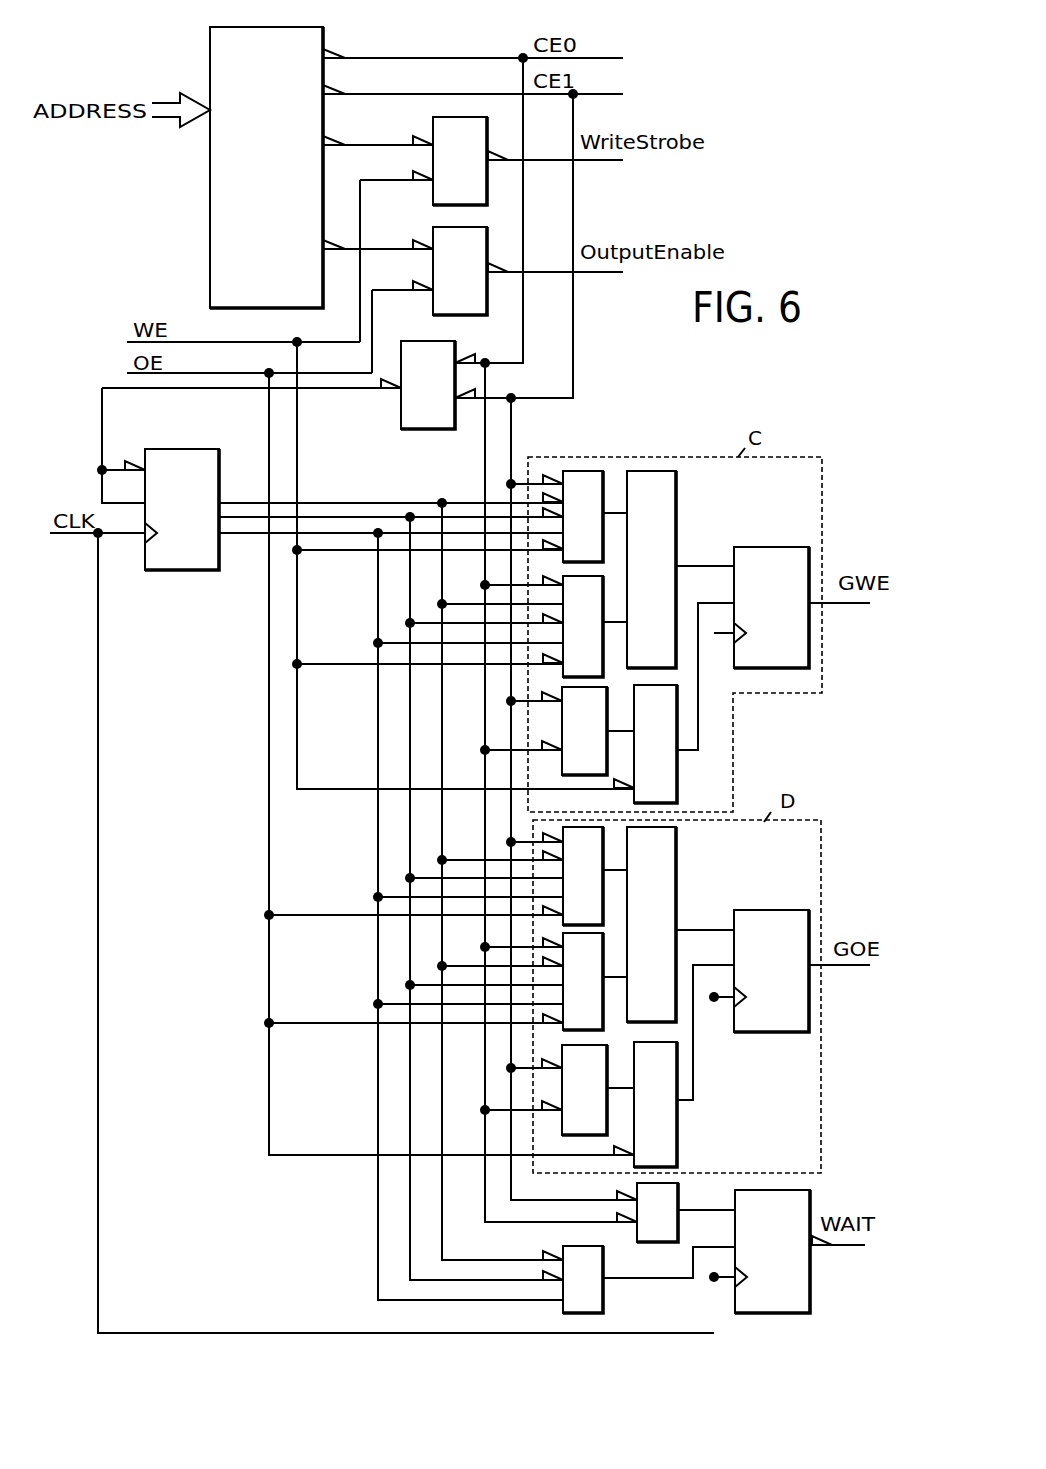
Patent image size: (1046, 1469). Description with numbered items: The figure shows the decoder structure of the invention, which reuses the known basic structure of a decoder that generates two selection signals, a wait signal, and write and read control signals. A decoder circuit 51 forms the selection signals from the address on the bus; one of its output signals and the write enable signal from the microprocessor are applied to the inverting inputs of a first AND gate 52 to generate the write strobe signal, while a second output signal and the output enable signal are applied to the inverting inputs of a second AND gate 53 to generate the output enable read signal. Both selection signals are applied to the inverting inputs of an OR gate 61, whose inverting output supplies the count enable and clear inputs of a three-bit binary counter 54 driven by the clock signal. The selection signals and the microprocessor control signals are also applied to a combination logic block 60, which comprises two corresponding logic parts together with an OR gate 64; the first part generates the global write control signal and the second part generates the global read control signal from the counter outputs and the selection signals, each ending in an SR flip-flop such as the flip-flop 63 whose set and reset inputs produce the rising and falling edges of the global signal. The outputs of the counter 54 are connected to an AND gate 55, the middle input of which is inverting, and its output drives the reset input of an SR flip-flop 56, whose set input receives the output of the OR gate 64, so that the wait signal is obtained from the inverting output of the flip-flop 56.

The decoder circuit 51 is at (258, 10).
The first AND gate 52 is at (478, 130).
The second AND gate 53 is at (478, 240).
The three-bit binary counter 54 is at (209, 467).
The AND gate 55 is at (598, 1300).
The SR flip-flop 56 is at (772, 1313).
The block 60 is at (648, 437).
The OR gate 61 is at (429, 420).
The flip-flop (GOE) 63 is at (752, 910).
The OR gate 64 is at (661, 1242).